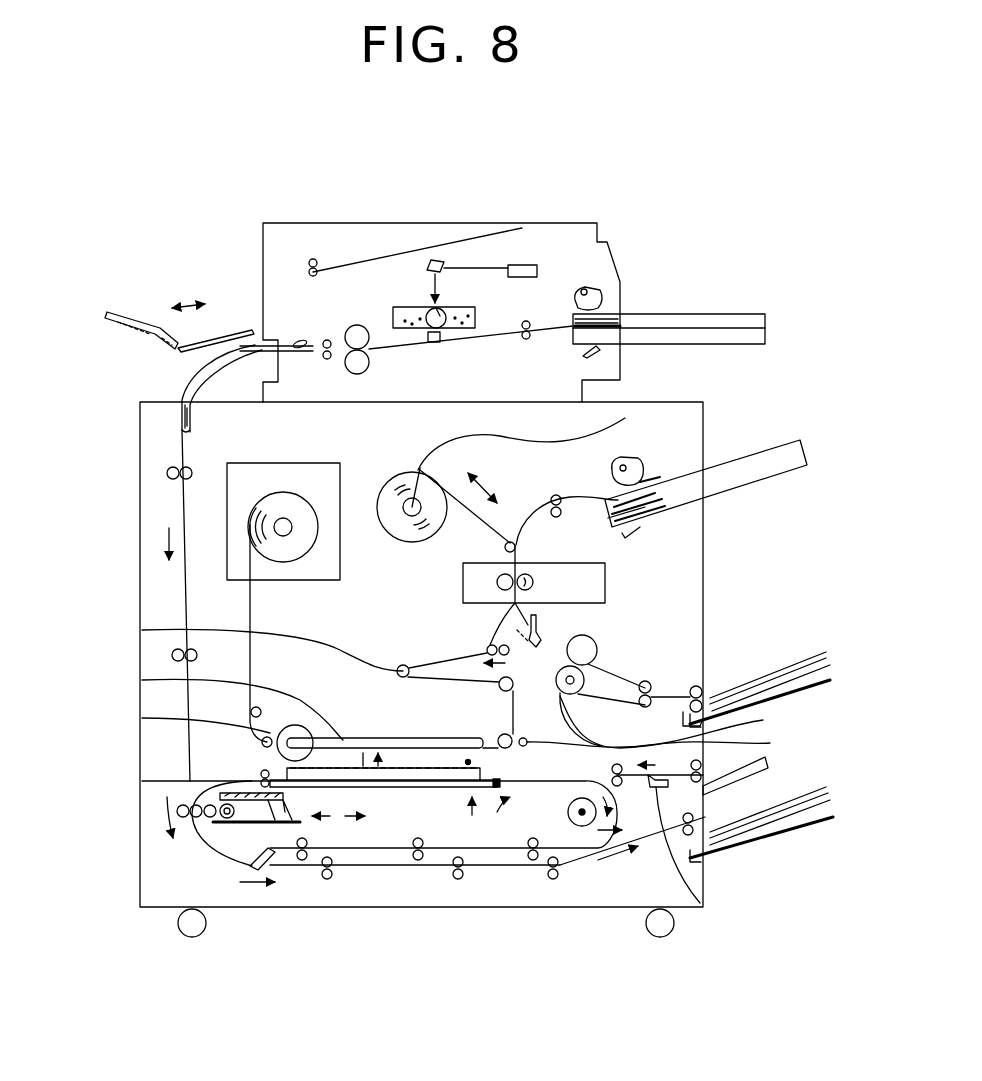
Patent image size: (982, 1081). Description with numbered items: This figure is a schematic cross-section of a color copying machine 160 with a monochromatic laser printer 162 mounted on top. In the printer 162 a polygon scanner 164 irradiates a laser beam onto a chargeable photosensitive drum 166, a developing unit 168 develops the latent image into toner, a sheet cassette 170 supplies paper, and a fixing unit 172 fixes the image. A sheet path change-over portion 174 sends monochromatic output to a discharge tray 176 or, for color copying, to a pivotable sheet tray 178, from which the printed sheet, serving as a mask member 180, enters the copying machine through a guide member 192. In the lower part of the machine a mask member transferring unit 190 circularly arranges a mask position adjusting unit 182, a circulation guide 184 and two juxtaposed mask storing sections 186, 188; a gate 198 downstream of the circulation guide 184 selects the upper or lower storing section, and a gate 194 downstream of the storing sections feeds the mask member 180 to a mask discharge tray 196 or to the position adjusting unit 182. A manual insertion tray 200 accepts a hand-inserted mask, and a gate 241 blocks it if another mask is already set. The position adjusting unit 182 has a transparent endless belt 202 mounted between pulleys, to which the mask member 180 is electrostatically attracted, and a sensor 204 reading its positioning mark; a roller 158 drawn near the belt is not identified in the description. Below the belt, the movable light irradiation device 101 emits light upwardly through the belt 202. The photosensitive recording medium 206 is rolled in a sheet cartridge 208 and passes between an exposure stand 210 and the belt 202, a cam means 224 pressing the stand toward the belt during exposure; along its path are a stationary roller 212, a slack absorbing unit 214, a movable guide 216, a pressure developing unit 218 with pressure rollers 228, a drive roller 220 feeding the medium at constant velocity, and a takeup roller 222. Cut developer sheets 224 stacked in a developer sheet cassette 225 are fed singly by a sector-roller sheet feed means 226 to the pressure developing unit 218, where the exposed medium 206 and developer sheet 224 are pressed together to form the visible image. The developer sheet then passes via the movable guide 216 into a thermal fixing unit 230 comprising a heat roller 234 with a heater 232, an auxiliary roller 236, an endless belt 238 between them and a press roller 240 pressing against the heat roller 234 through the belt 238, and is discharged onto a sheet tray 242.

The light irradiation device 101 is at (207, 800).
The drive roller 158 is at (603, 838).
The color copying machine 160 is at (602, 413).
The monochromatic laser printer 162 is at (460, 194).
The polygon scanner 164 is at (535, 265).
The photosensitive drum 166 is at (442, 308).
The developing unit 168 is at (405, 307).
The sheet cassette 170 is at (680, 314).
The fixing unit 172 is at (313, 259).
The sheet path change-over portion 174 is at (300, 341).
The discharge tray 176 is at (355, 325).
The sheet tray 178 is at (176, 349).
The mask member 180 is at (182, 365).
The mask position adjusting unit 182 is at (497, 788).
The circulation guide 184 is at (192, 848).
The mask storing section 186 is at (318, 868).
The mask storing section 188 is at (340, 878).
The mask member transferring unit 190 is at (184, 768).
The guide member 192 is at (184, 422).
The gate 194 is at (688, 836).
The mask discharge tray 196 is at (774, 842).
The gate 198 is at (258, 872).
The manual insertion tray 200 is at (735, 773).
The endless belt 202 is at (582, 827).
The sensor 204 is at (468, 765).
The photosensitive recording medium 206 is at (250, 612).
The sheet cartridge 208 is at (238, 467).
The exposure stand 210 is at (250, 683).
The stationary roller 212 is at (670, 743).
The slack absorbing unit 214 is at (250, 632).
The movable guide 216 is at (539, 622).
The pressure developing unit 218 is at (603, 571).
The drive roller 220 is at (530, 580).
The takeup roller 222 is at (635, 416).
The developer sheet 224 is at (250, 716).
The developer sheet cassette 225 is at (802, 468).
The sheet feed means 226 is at (646, 467).
The pressure roller 228 is at (620, 532).
The thermal fixing unit 230 is at (622, 680).
The heater 232 is at (691, 722).
The heat roller 234 is at (584, 664).
The auxiliary roller 236 is at (697, 686).
The endless belt 238 is at (612, 708).
The press roller 240 is at (590, 636).
The gate 241 is at (702, 906).
The sheet tray 242 is at (820, 684).